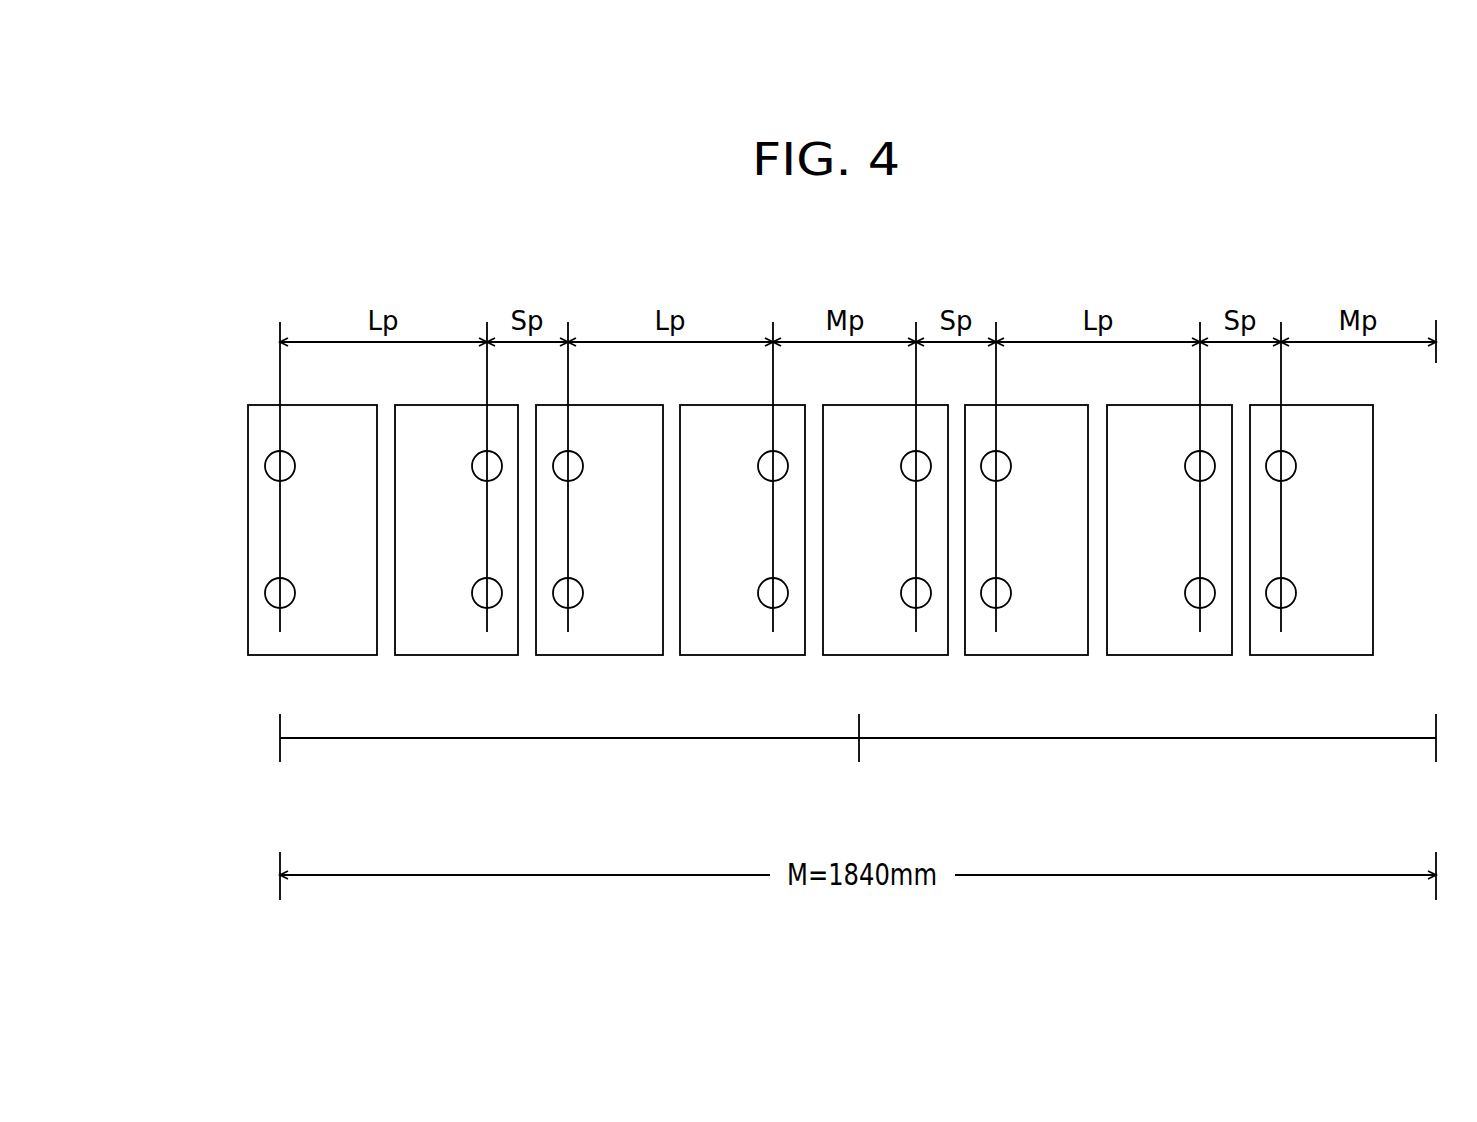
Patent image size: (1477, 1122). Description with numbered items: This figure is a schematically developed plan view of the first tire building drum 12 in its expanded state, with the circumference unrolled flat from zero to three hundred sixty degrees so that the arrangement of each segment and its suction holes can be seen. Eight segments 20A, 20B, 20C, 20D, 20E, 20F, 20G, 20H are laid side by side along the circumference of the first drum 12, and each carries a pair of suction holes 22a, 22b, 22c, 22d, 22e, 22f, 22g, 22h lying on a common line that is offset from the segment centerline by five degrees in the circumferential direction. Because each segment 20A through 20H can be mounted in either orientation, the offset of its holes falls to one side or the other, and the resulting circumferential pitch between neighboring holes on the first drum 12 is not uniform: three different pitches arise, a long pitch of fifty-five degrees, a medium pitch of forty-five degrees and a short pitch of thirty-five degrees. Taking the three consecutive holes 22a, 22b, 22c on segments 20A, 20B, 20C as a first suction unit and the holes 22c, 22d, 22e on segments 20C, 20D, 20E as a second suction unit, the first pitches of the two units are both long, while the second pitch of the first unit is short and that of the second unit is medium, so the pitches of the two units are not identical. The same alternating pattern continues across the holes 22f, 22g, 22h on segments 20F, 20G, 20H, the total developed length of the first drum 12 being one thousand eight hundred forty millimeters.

The first drum 12 is at (263, 739).
The segment 20A is at (282, 647).
The segment 20B is at (432, 642).
The segment 20C is at (587, 642).
The segment 20D is at (750, 642).
The segment 20E is at (883, 642).
The segment 20F is at (1012, 642).
The segment 20G is at (1175, 642).
The segment 20H is at (1313, 642).
The suction hole 22a is at (265, 594).
The suction hole 22b is at (472, 594).
The suction hole 22c is at (598, 594).
The suction hole 22d is at (758, 594).
The suction hole 22e is at (901, 594).
The suction hole 22f is at (1026, 594).
The suction hole 22g is at (1185, 594).
The suction hole 22h is at (1377, 597).